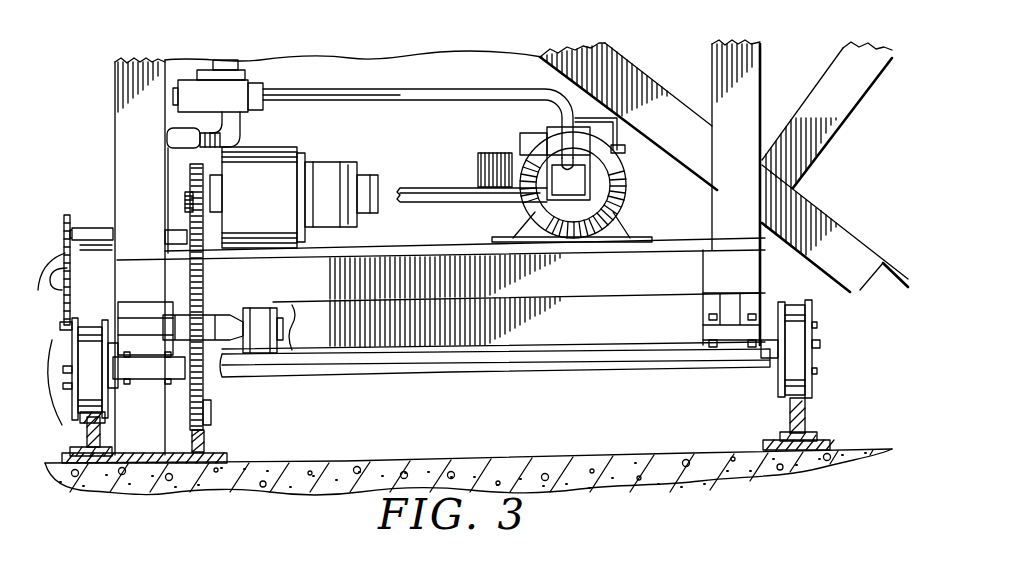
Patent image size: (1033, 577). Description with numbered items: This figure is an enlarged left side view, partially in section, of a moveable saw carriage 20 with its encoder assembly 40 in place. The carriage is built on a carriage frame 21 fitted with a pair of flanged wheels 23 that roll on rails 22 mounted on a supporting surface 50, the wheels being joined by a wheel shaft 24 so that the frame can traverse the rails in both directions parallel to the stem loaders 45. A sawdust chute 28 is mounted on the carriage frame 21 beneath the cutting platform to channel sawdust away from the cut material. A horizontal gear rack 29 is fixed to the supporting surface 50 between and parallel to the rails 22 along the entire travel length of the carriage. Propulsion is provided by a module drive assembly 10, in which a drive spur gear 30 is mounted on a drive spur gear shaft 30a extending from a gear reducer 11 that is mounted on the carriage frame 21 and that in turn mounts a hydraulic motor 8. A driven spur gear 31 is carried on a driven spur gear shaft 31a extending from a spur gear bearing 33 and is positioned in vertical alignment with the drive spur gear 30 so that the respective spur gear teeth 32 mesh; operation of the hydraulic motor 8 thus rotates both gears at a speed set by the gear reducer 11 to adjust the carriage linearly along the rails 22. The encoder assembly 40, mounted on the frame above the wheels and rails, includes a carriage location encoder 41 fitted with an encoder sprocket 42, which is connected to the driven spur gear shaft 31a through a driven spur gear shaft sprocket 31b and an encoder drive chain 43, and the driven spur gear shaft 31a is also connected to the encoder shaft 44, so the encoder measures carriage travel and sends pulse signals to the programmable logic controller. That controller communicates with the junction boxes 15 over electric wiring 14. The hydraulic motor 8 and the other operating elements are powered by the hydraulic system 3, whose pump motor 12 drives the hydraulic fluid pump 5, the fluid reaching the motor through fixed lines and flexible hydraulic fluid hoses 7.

The hydraulic system 3 is at (403, 45).
The hydraulic fluid pump 5 is at (593, 183).
The flexible hydraulic fluid hose 7 is at (439, 187).
The hydraulic motor 8 is at (333, 203).
The module drive assembly 10 is at (272, 180).
The gear reducer 11 is at (270, 204).
The pump motor 12 is at (621, 193).
The electric wiring 14 is at (389, 102).
The junction box 15 is at (224, 109).
The moveable saw carriage 20 is at (803, 62).
The carriage frame 21 is at (110, 130).
The rail 22 is at (102, 437).
The flanged wheel 23 is at (112, 387).
The wheel shaft 24 is at (372, 364).
The sawdust chute 28 is at (827, 230).
The horizontal gear rack 29 is at (217, 445).
The drive spur gear 30 is at (187, 172).
The drive spur gear shaft 30a is at (154, 238).
The driven spur gear 31 is at (213, 398).
The driven spur gear shaft 31a is at (227, 305).
The driven spur gear shaft sprocket 31b is at (63, 396).
The spur gear teeth 32 is at (187, 187).
The spur gear bearing 33 is at (275, 307).
The encoder assembly 40 is at (74, 249).
The carriage location encoder 41 is at (103, 230).
The encoder sprocket 42 is at (63, 217).
The encoder drive chain 43 is at (55, 325).
The encoder shaft 44 is at (51, 275).
The stem loader 45 is at (82, 267).
The supporting surface 50 is at (453, 432).